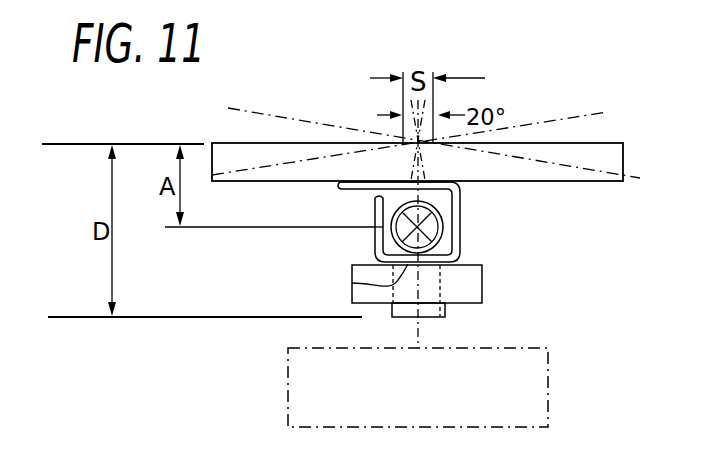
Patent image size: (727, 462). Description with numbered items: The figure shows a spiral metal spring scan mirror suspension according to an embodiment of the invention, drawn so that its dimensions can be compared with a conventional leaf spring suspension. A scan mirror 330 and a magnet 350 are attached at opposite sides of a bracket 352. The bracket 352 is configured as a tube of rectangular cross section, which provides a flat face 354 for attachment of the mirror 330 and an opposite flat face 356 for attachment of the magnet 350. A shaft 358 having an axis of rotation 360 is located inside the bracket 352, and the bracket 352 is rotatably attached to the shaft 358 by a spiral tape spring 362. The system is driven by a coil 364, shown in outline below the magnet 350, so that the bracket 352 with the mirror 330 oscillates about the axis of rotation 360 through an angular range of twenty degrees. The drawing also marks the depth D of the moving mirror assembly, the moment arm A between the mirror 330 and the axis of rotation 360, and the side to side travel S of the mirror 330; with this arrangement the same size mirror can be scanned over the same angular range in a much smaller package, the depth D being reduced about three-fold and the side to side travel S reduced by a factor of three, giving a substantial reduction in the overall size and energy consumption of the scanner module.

The scan mirror 330 is at (343, 142).
The flat face 354 is at (450, 182).
The bracket 352 is at (462, 229).
The shaft 358 is at (432, 210).
The spiral tape spring 362 is at (436, 222).
The axis of rotation 360 is at (380, 241).
The flat face 356 is at (352, 283).
The magnet 350 is at (482, 300).
The coil 364 is at (542, 357).